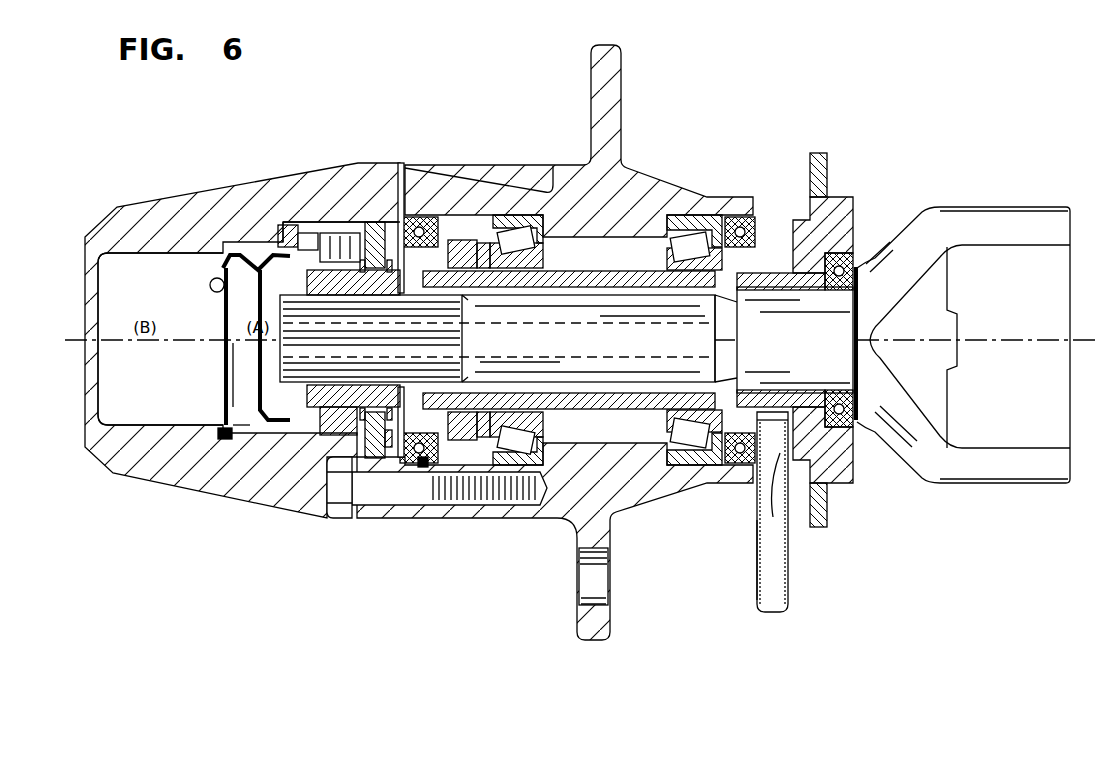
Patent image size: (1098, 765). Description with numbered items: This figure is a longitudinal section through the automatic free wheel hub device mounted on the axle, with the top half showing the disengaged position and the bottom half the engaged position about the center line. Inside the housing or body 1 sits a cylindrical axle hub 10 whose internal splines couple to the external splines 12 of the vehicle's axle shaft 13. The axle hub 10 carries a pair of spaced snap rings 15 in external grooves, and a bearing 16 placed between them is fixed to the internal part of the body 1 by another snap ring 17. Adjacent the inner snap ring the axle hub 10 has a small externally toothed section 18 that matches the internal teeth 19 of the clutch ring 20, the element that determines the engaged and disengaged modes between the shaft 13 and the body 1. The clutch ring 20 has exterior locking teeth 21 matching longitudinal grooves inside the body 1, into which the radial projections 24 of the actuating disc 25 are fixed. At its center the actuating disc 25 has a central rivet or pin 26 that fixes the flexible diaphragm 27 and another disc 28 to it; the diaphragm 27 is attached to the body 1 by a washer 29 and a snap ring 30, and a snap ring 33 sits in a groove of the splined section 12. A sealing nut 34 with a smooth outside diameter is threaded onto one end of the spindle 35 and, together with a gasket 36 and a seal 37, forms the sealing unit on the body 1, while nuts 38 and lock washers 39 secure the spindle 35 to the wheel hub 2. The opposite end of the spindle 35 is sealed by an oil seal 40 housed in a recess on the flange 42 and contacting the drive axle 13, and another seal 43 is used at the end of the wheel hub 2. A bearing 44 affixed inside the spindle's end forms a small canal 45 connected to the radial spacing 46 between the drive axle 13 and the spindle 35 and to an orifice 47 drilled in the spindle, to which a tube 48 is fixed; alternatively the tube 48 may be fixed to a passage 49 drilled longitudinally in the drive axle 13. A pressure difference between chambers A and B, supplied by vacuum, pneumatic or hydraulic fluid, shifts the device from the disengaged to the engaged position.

The housing or body 1 is at (130, 440).
The wheel hub 2 is at (578, 497).
The axle hub 10 is at (323, 228).
The external splines 12 is at (330, 362).
The axle shaft 13 is at (612, 327).
The snap rings 15 is at (358, 258).
The bearing 16 is at (377, 240).
The snap ring 17 is at (400, 200).
The externally toothed section 18 is at (340, 240).
The internal teeth 19 is at (293, 227).
The clutch ring 20 is at (325, 400).
The locking teeth 21 is at (280, 223).
The radial projections 24 is at (240, 247).
The actuating disc 25 is at (270, 425).
The central rivet or pin 26 is at (220, 337).
The diaphragm 27 is at (233, 240).
The disc 28 is at (215, 295).
The washer 29 is at (230, 437).
The snap ring 30 is at (240, 437).
The snap ring 33 is at (390, 440).
The sealing nut 34 is at (440, 420).
The spindle 35 is at (582, 277).
The gasket 36 is at (432, 455).
The seal 37 is at (422, 225).
The nuts 38 is at (490, 215).
The lock washers 39 is at (484, 445).
The oil seal 40 is at (857, 267).
The flange 42 is at (828, 217).
The seal 43 is at (742, 217).
The bearing 44 is at (778, 277).
The canal or passage 45 is at (753, 430).
The radial spacing 46 is at (628, 385).
The orifice 47 is at (778, 458).
The tube 48 is at (780, 583).
The orifice or passage 49 is at (932, 335).